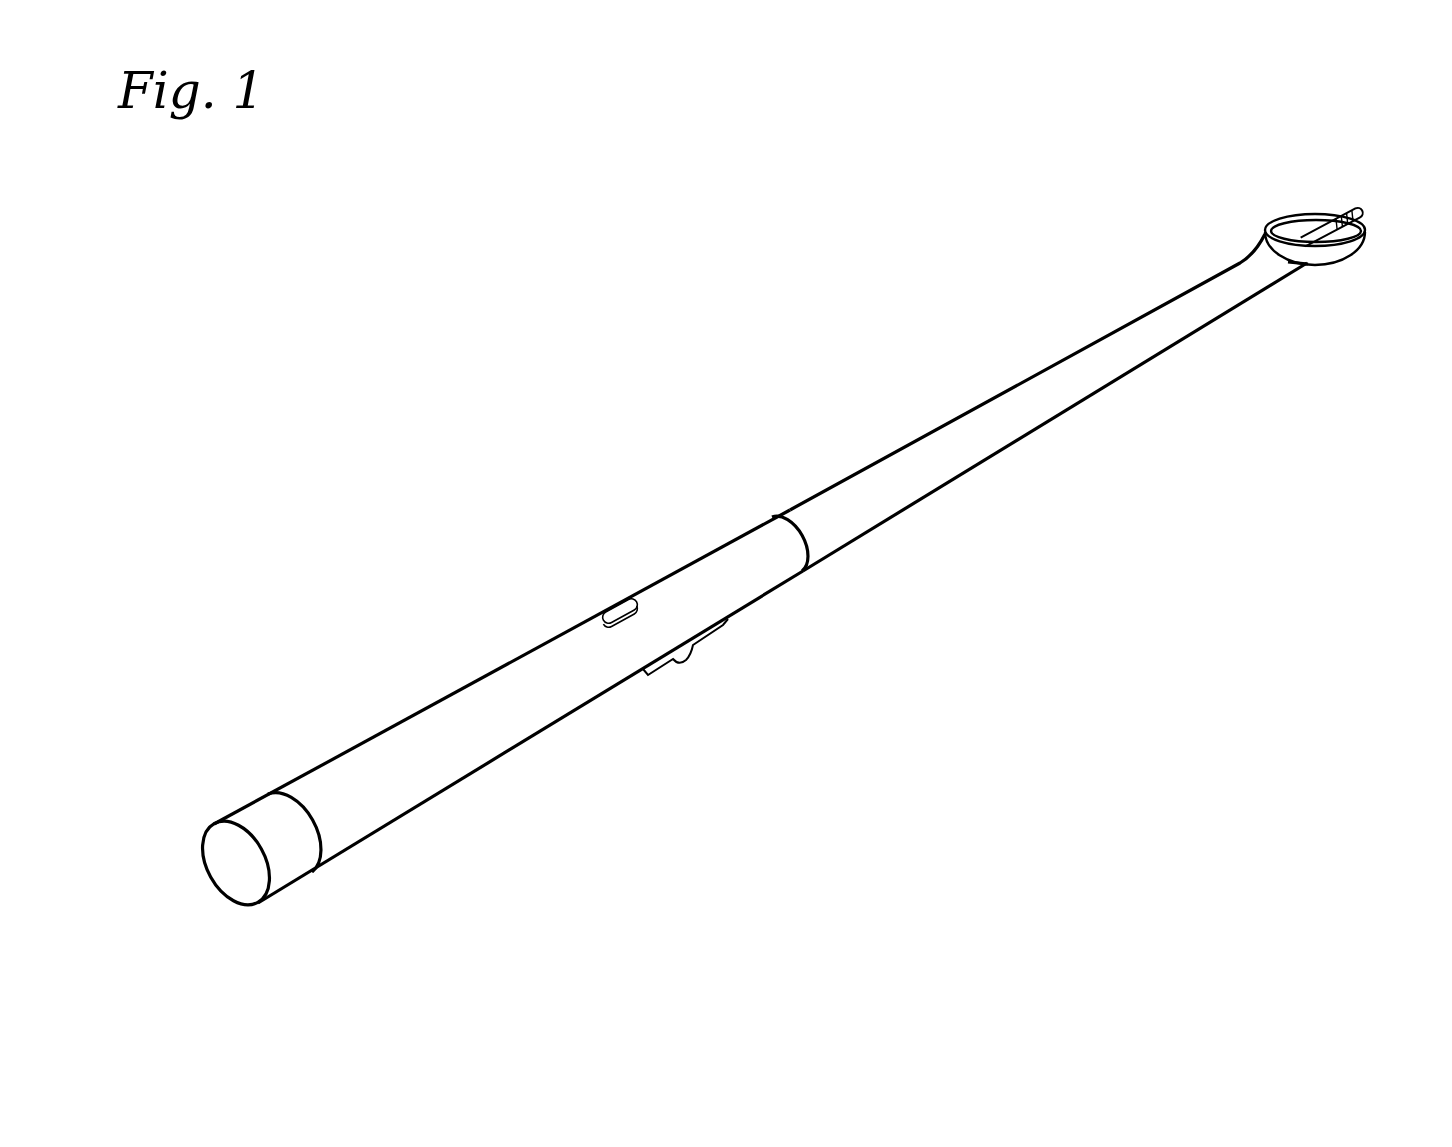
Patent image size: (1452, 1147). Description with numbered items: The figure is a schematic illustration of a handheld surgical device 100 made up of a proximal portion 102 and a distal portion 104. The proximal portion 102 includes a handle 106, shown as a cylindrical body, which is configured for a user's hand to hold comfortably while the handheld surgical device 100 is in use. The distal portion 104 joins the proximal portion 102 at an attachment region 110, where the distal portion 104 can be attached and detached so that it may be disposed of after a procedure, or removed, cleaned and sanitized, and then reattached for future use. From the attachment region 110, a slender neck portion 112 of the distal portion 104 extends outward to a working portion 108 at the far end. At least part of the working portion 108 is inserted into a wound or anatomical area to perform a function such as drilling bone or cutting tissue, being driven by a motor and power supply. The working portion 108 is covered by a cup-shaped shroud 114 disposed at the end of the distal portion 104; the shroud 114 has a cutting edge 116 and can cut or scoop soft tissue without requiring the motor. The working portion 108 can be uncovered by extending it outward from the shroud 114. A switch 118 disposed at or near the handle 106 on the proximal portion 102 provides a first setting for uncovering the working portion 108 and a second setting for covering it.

The handheld surgical device 100 is at (705, 214).
The proximal portion 102 is at (302, 979).
The distal portion 104 is at (562, 826).
The handle 106 is at (420, 710).
The working portion 108 is at (1362, 212).
The attachment region 110 is at (780, 517).
The neck portion 112 is at (1030, 378).
The shroud 114 is at (1352, 258).
The cutting edge 116 is at (1290, 215).
The switch 118 is at (685, 663).